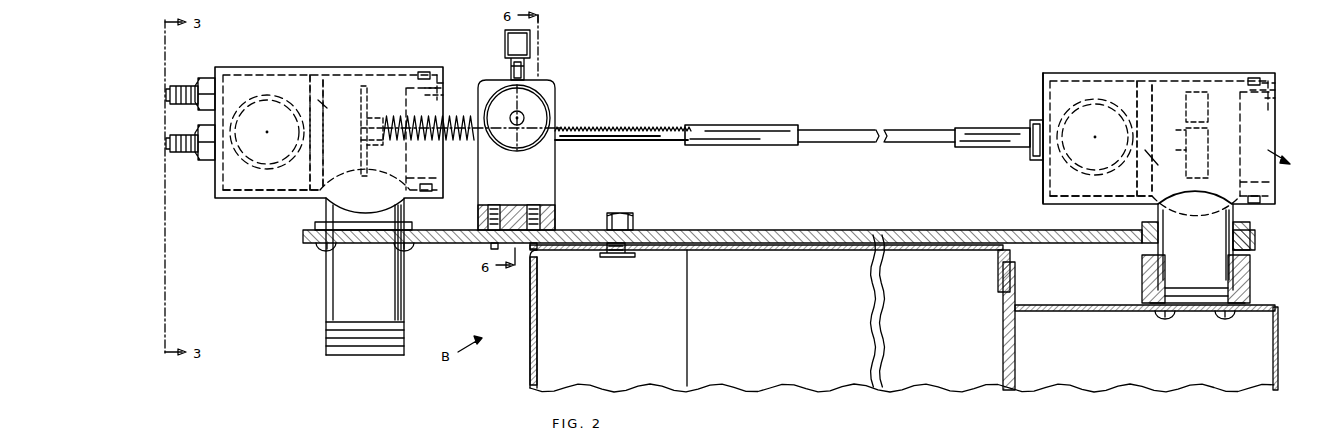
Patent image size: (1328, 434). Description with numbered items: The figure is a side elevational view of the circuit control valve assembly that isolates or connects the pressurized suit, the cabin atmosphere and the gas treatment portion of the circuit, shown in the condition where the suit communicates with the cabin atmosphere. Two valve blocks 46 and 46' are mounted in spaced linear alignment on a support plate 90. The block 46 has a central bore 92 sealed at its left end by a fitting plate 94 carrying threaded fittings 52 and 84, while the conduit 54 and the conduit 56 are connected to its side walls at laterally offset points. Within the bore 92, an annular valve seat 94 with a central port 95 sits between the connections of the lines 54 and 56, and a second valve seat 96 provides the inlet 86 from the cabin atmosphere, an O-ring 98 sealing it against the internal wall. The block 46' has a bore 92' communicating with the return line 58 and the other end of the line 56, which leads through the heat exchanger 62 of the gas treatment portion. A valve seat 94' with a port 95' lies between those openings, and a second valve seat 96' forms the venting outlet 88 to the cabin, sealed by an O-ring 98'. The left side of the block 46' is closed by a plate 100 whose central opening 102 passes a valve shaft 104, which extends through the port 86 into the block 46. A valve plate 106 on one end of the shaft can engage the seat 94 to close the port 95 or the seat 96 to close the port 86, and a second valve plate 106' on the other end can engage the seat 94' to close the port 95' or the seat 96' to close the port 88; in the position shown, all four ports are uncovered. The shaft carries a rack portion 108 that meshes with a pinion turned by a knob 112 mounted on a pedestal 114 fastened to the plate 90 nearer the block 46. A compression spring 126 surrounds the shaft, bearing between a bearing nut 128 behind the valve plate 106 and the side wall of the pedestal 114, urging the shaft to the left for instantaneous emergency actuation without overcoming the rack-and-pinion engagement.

The valve block 46 is at (329, 126).
The valve block 46' is at (1159, 130).
The threaded fitting 52 is at (190, 82).
The conduit 54 is at (266, 100).
The conduit 56 is at (782, 276).
The return line 58 is at (1095, 110).
The heat exchanger 62 is at (904, 313).
The threaded fitting 84 is at (190, 165).
The inlet port 86 is at (444, 92).
The venting outlet 88 is at (1268, 98).
The support plate 90 is at (648, 230).
The bore 92 is at (271, 206).
The bore 92' is at (1101, 210).
The valve seat 94 is at (677, 126).
The valve seat 94' is at (1161, 124).
The port 95 is at (335, 112).
The port 95' is at (1162, 165).
The second valve seat 96 is at (449, 69).
The second valve seat 96' is at (1282, 81).
The O-ring 98 is at (423, 110).
The O-ring 98' is at (1274, 153).
The end plate 100 is at (1042, 98).
The central opening 102 is at (1030, 165).
The valve shaft 104 is at (752, 126).
The valve plate 106 is at (347, 126).
The second valve plate 106' is at (1205, 135).
The rack portion 108 is at (632, 128).
The knob 112 is at (538, 105).
The pedestal 114 is at (545, 177).
The compression spring 126 is at (478, 140).
The bearing nut 128 is at (378, 116).